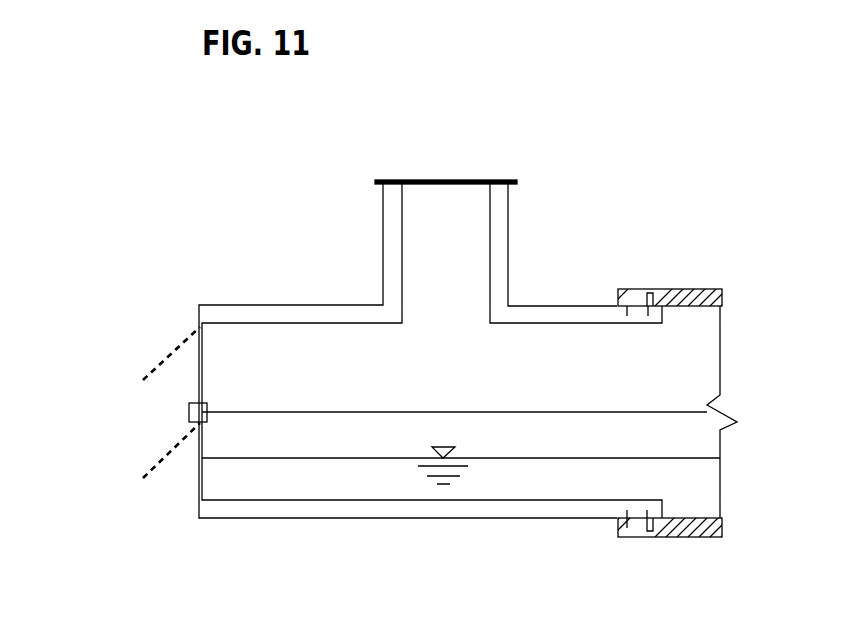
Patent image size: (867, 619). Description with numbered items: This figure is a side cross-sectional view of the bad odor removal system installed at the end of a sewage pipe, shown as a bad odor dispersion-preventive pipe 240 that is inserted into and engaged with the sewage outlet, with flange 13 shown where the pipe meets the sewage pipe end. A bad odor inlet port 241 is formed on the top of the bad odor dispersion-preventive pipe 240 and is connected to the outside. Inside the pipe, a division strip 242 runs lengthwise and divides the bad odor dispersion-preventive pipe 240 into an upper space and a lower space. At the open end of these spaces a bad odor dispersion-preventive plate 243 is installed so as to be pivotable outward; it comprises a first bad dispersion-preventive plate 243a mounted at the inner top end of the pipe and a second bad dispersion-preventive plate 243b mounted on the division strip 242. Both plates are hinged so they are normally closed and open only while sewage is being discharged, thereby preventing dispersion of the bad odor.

The flange 13 is at (697, 288).
The bad odor dispersion-preventive pipe 240 is at (568, 316).
The bad odor inlet port 241 is at (460, 180).
The division strip 242 is at (325, 413).
The bad odor dispersion-preventive plate 243 is at (152, 387).
The first bad dispersion-preventive plate 243a is at (168, 353).
The second bad dispersion-preventive plate 243b is at (160, 463).